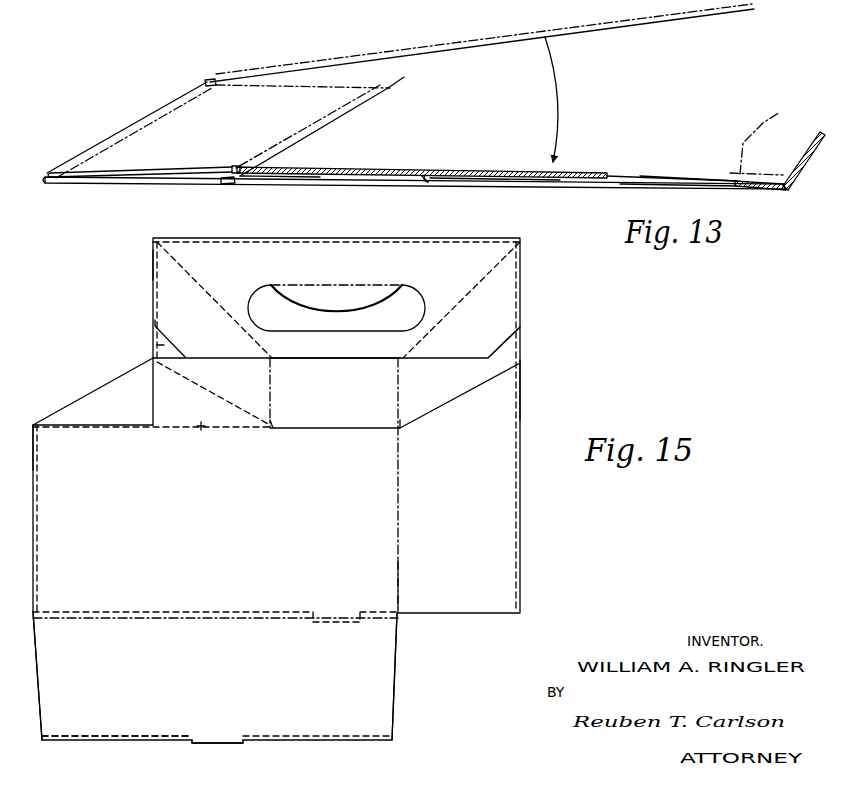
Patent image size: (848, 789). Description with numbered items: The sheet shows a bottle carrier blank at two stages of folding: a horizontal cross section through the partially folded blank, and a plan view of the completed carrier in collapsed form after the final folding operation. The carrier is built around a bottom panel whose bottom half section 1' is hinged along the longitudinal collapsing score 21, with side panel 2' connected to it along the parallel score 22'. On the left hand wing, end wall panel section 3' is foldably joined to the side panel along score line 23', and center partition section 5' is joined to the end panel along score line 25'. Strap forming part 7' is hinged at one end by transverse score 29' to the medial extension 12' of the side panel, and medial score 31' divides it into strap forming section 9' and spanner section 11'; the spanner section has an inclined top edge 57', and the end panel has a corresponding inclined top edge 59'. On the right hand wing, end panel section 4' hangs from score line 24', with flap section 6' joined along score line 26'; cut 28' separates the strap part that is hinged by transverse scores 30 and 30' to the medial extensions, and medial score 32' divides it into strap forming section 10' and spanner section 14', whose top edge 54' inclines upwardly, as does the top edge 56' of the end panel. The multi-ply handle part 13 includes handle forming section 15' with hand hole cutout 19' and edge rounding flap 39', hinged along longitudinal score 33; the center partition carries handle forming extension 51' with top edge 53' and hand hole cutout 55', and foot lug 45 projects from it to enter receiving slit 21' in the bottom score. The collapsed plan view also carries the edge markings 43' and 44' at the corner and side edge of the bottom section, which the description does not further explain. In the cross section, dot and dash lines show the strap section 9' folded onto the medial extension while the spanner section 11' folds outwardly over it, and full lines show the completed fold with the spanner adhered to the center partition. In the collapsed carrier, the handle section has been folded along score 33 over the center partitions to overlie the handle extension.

In FIG. 15, the bottom half section 1' is at (215, 677).
In FIG. 13, the side panel 2' is at (414, 193).
In FIG. 15, the side panel 2' is at (151, 518).
In FIG. 13, the end wall panel section 3' is at (139, 130).
In FIG. 15, the end wall panel section 3' is at (93, 382).
In FIG. 15, the end panel section 4' is at (459, 552).
In FIG. 13, the center partition section 5' is at (688, 155).
In FIG. 13, the flap section 6' is at (777, 147).
In FIG. 13, the strap forming part 7' is at (343, 132).
In FIG. 13, the strap forming section 9' is at (314, 147).
In FIG. 15, the strap forming section 9' is at (212, 439).
In FIG. 13, the strap forming section 10' is at (495, 193).
In FIG. 15, the strap forming section 10' is at (335, 378).
In FIG. 13, the spanner section 11' is at (303, 126).
In FIG. 15, the spanner section 11' is at (319, 333).
In FIG. 13, the medial extension 12' is at (280, 192).
In FIG. 15, the medial extension 12' is at (244, 392).
In FIG. 15, the multi-ply handle part 13 is at (151, 264).
In FIG. 13, the spanner section 14' is at (678, 196).
In FIG. 15, the spanner section 14' is at (425, 485).
In FIG. 15, the handle forming section 15' is at (364, 425).
In FIG. 15, the hand hole cutout 19' is at (351, 302).
In FIG. 15, the collapsing score 21 is at (117, 752).
In FIG. 15, the receiving slit 21' is at (236, 753).
In FIG. 15, the score 22' is at (215, 627).
In FIG. 13, the score line 23' is at (50, 200).
In FIG. 15, the score line 23' is at (33, 429).
In FIG. 15, the score line 24' is at (377, 585).
In FIG. 13, the score line 25' is at (201, 112).
In FIG. 13, the score line 26' is at (797, 209).
In FIG. 15, the score line 26' is at (545, 390).
In FIG. 15, the cut 28' is at (335, 441).
In FIG. 13, the transverse score 29' is at (232, 196).
In FIG. 15, the transverse score 30 is at (287, 433).
In FIG. 13, the transverse score 30' is at (437, 195).
In FIG. 13, the medial score 31' is at (412, 124).
In FIG. 13, the medial score 32' is at (656, 192).
In FIG. 15, the medial score 32' is at (379, 435).
In FIG. 15, the longitudinal score 33 is at (385, 238).
In FIG. 15, the edge rounding flap 39' is at (330, 304).
In FIG. 15, the corner 43' is at (37, 688).
In FIG. 15, the side edge 44' is at (416, 676).
In FIG. 15, the foot lug 45 is at (337, 623).
In FIG. 13, the handle forming extension 51' is at (482, 89).
In FIG. 13, the top edge 53' is at (206, 7).
In FIG. 13, the top edge 54' is at (345, 7).
In FIG. 15, the top edge 54' is at (480, 290).
In FIG. 13, the hand hole cutout 55' is at (258, 7).
In FIG. 15, the top edge 56' is at (460, 395).
In FIG. 15, the inclined top edge 57' is at (214, 300).
In FIG. 15, the inclined top edge 59' is at (170, 391).